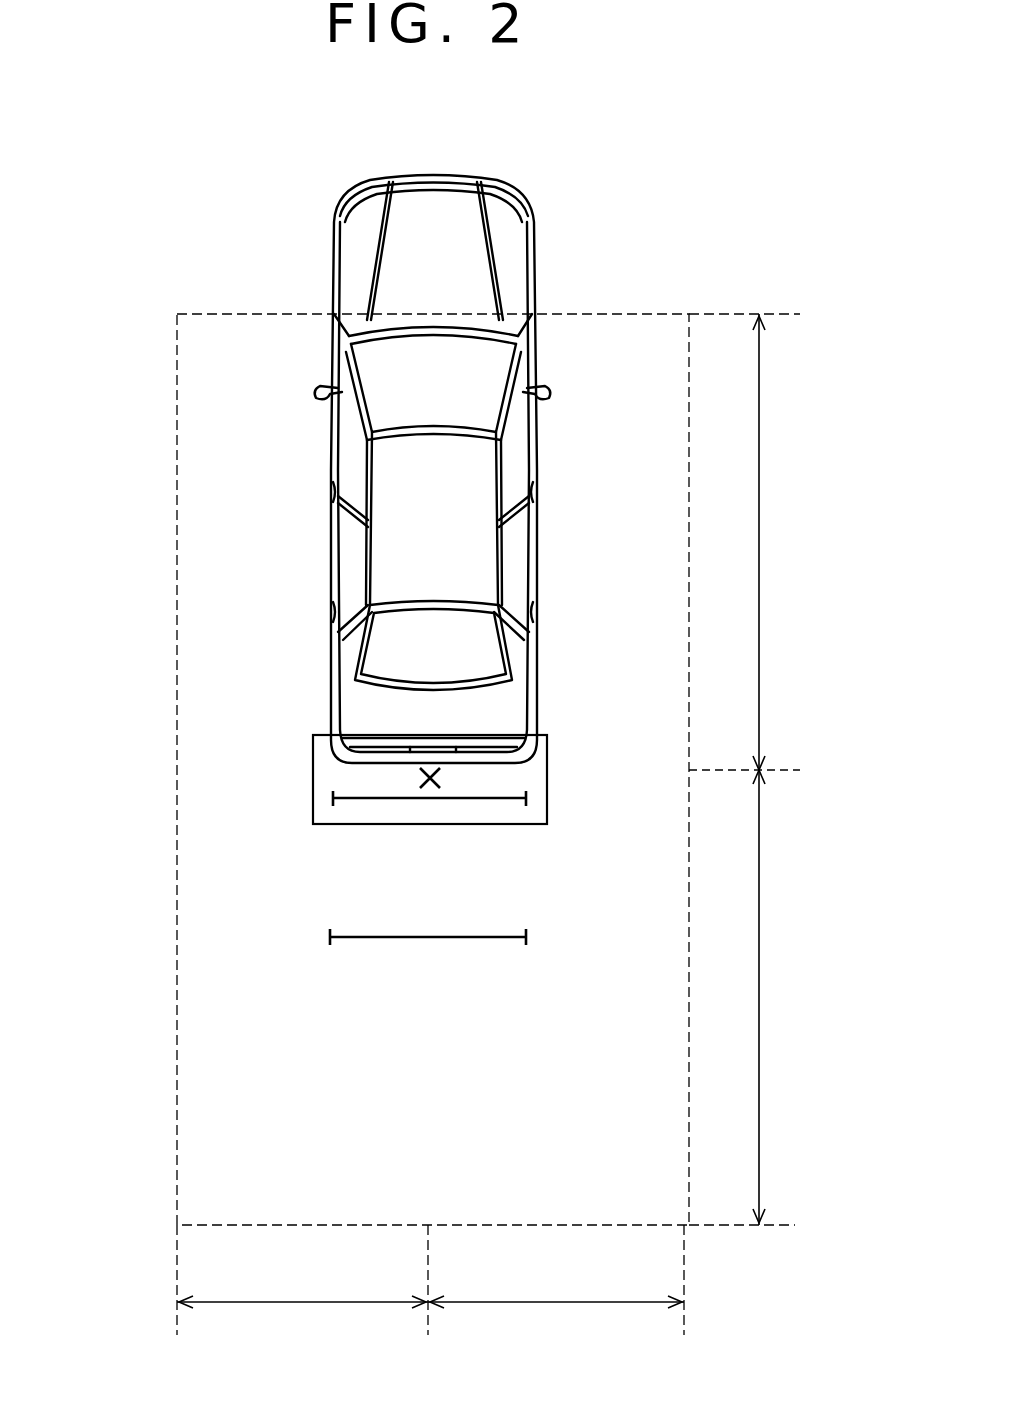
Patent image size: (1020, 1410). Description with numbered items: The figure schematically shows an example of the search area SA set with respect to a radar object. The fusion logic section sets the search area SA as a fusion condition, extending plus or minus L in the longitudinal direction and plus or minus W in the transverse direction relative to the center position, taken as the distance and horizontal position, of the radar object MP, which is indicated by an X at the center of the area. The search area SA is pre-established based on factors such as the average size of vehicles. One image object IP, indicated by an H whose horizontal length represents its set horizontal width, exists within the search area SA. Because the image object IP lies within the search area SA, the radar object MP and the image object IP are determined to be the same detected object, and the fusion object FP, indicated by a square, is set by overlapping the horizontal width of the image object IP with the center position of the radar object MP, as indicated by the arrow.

The search area SA is at (177, 427).
The radar object MP is at (420, 778).
The fusion object FP is at (547, 755).
The image object IP is at (330, 935).
The longitudinal extent of search area L is at (778, 769).
The transverse extent of search area W is at (430, 1284).